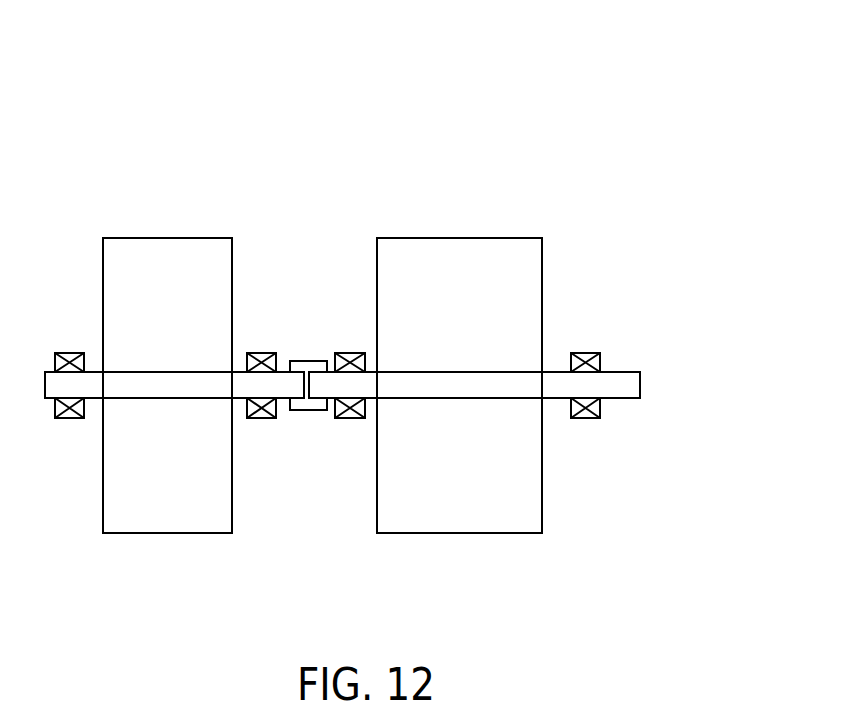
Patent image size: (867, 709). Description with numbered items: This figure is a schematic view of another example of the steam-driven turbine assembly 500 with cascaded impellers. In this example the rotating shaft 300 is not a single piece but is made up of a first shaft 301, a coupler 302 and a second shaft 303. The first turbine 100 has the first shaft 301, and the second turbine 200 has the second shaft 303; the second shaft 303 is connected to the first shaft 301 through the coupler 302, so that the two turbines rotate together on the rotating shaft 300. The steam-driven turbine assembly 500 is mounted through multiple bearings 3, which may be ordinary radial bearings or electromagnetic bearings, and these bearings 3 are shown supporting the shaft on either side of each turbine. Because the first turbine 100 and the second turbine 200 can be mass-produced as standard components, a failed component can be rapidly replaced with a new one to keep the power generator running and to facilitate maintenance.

The steam-driven turbine assembly 500 is at (385, 56).
The first turbine 100 is at (174, 235).
The second turbine 200 is at (462, 237).
The rotating shaft 300 is at (697, 28).
The first shaft 301 is at (93, 380).
The coupler 302 is at (307, 361).
The second shaft 303 is at (622, 380).
The bearing 3 is at (69, 420).